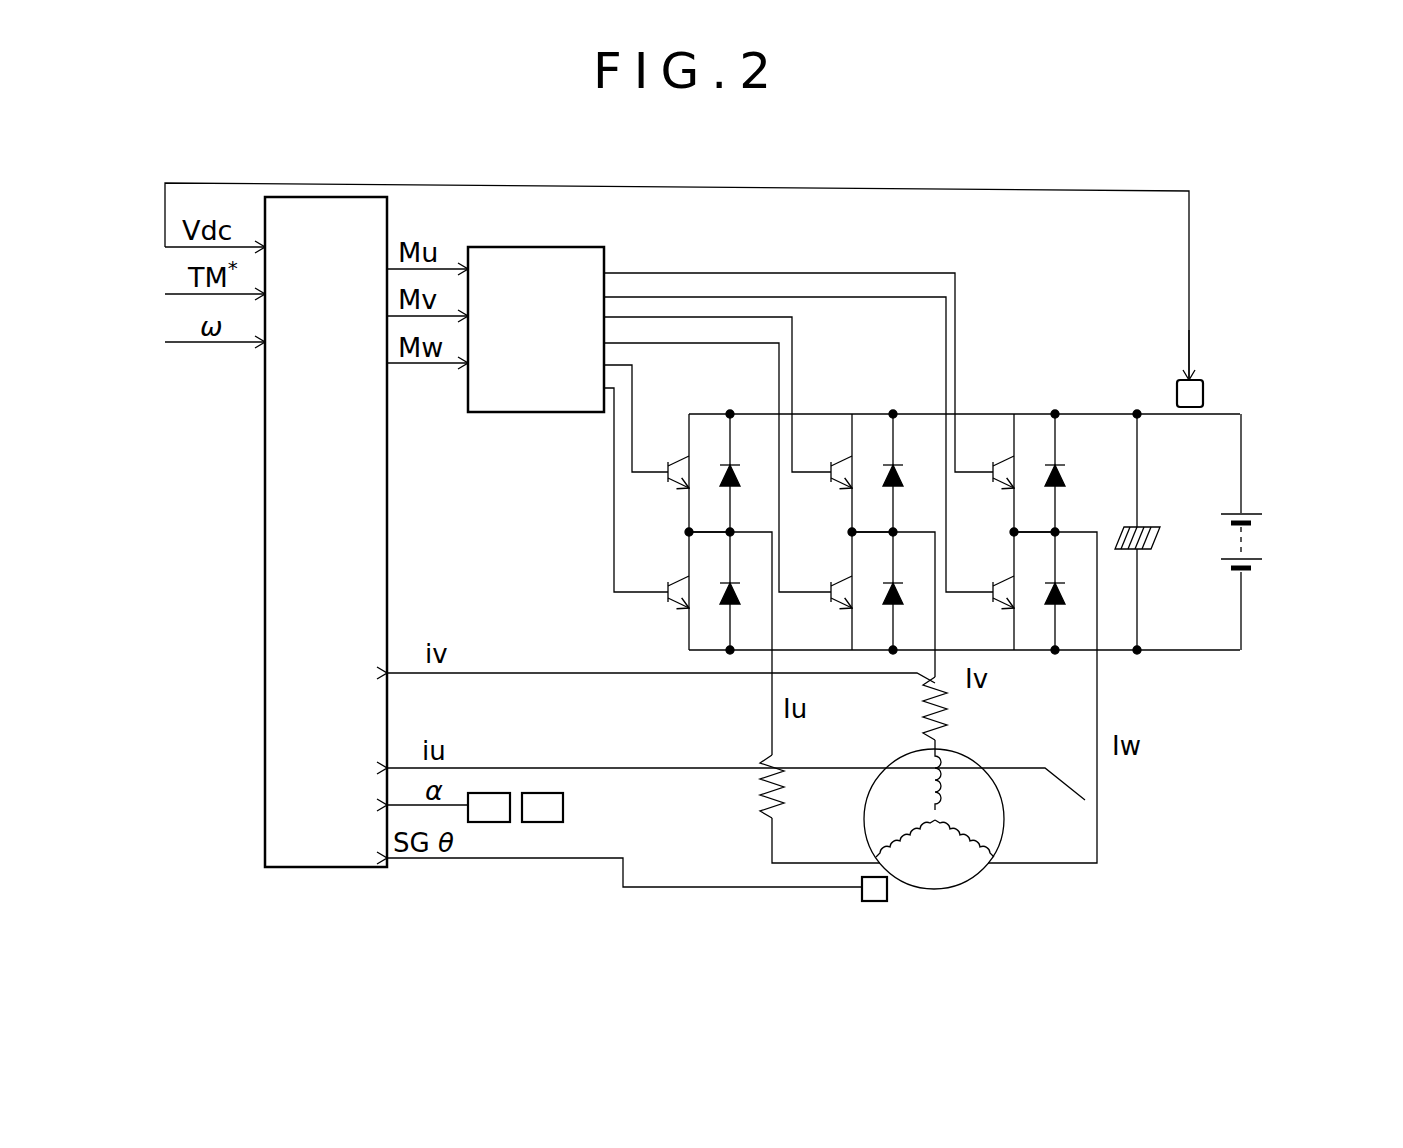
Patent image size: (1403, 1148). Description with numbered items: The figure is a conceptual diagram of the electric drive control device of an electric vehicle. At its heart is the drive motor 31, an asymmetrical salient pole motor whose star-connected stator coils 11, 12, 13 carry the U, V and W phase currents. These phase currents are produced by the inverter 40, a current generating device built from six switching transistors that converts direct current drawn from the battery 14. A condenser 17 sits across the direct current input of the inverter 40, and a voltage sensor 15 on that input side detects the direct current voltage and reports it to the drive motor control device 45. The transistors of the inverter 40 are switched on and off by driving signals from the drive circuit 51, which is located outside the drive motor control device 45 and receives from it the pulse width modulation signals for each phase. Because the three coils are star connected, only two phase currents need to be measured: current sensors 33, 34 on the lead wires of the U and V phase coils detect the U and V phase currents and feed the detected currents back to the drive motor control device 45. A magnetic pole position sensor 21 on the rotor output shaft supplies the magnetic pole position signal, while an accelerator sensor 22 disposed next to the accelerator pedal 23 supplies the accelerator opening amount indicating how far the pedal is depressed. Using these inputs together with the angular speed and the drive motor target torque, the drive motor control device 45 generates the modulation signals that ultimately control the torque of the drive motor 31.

The drive motor control device 45 is at (387, 203).
The drive circuit 51 is at (605, 248).
The inverter 40 is at (971, 398).
The voltage sensor 15 is at (1203, 390).
The condenser 17 is at (1133, 527).
The battery 14 is at (1262, 514).
The current sensor 33 is at (822, 768).
The current sensor 34 is at (925, 697).
The drive motor 31 is at (974, 819).
The stator coil 11 is at (918, 846).
The stator coil 12 is at (935, 795).
The stator coil 13 is at (957, 835).
The accelerator sensor 22 is at (488, 793).
The accelerator pedal 23 is at (563, 805).
The magnetic pole position sensor 21 is at (872, 901).